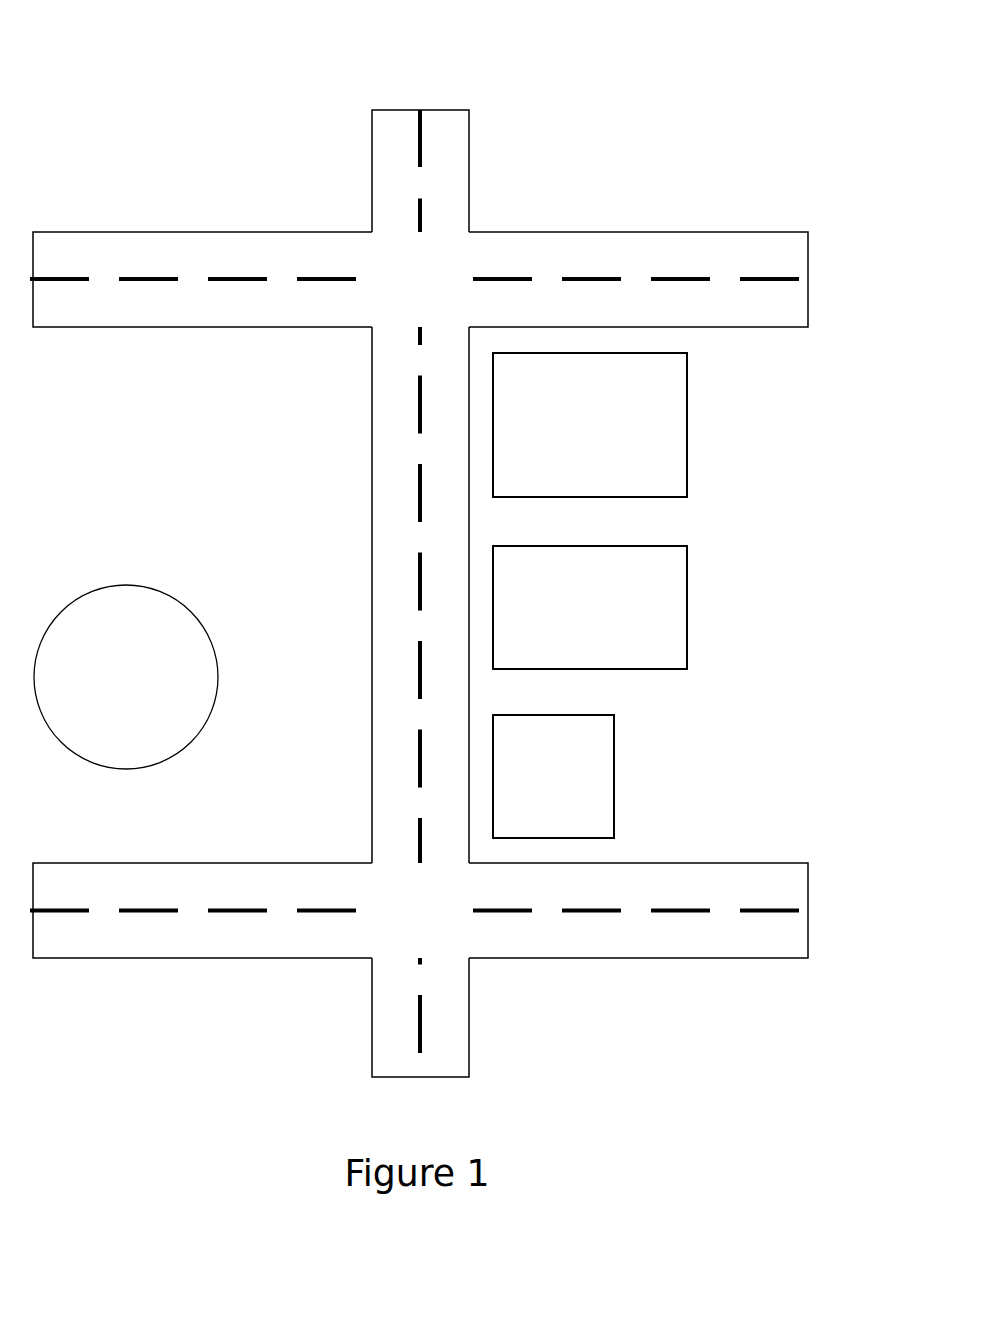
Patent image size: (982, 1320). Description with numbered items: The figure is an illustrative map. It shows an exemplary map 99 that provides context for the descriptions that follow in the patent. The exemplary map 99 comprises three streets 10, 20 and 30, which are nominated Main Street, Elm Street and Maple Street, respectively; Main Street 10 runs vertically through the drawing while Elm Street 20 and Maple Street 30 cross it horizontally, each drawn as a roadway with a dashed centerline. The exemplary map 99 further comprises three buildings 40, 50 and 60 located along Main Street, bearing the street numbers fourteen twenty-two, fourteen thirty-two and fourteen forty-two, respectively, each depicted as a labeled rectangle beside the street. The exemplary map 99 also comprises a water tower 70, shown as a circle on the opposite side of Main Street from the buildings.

The street 10 is at (372, 415).
The street 20 is at (129, 327).
The street 30 is at (129, 958).
The building 40 is at (687, 422).
The building 50 is at (687, 605).
The building 60 is at (614, 775).
The water tower 70 is at (202, 625).
The exemplary map 99 is at (682, 66).